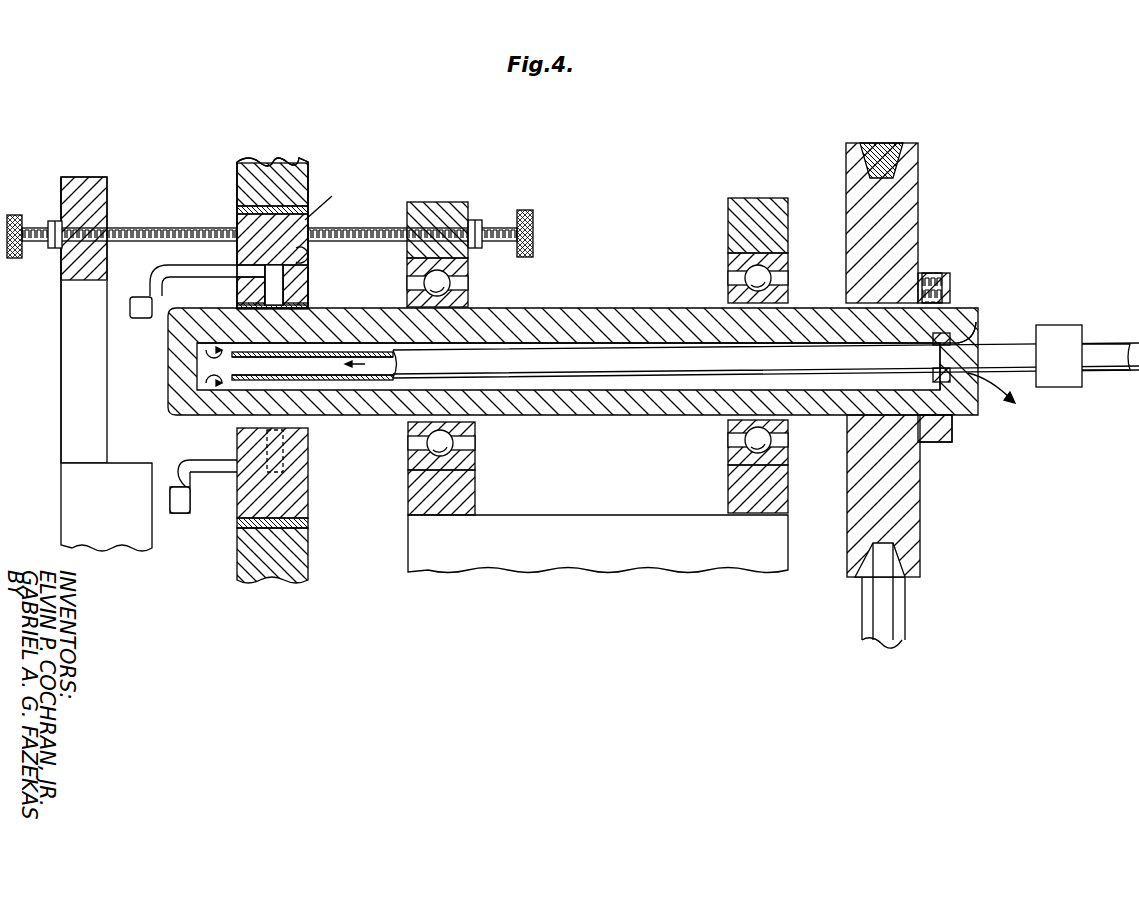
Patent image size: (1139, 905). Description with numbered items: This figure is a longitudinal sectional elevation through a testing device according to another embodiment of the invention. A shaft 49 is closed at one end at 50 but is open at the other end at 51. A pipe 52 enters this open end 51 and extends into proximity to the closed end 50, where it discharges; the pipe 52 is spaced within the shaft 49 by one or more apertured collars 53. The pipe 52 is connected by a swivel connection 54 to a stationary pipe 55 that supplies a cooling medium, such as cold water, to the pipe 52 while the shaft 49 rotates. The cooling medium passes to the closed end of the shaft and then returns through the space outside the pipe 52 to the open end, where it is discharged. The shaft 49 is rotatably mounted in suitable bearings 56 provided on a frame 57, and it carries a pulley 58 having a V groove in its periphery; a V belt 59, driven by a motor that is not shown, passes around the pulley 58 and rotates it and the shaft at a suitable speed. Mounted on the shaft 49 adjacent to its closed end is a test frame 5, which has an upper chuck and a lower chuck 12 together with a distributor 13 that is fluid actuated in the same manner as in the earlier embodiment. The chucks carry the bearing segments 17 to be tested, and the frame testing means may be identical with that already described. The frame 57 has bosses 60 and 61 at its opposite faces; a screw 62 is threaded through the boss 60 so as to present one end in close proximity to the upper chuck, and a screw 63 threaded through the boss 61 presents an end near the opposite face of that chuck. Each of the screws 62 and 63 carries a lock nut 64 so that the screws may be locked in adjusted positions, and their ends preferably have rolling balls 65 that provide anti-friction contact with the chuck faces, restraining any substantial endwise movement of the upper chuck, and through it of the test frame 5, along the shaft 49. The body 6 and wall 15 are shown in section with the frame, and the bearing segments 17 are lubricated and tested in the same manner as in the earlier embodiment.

The frame 5 is at (309, 163).
The chuck body 6 is at (281, 214).
The lower chuck 12 is at (300, 502).
The distributor 13 is at (300, 574).
The body wall 15 is at (332, 197).
The bearing segments 17 is at (310, 312).
The shaft 49 is at (600, 320).
The closed end 50 is at (182, 372).
The open end 51 is at (980, 325).
The pipe 52 is at (1005, 343).
The apertured collars 53 is at (955, 418).
The swivel connection 54 is at (1061, 325).
The stationary pipe 55 is at (1100, 344).
The bearings 56 is at (470, 300).
The frame 57 is at (72, 503).
The pulley 58 is at (905, 208).
The V belt 59 is at (876, 155).
The boss 60 is at (430, 204).
The boss 61 is at (78, 183).
The screw 62 is at (526, 212).
The screw 63 is at (112, 232).
The lock nut 64 is at (50, 253).
The rolling balls 65 is at (244, 210).